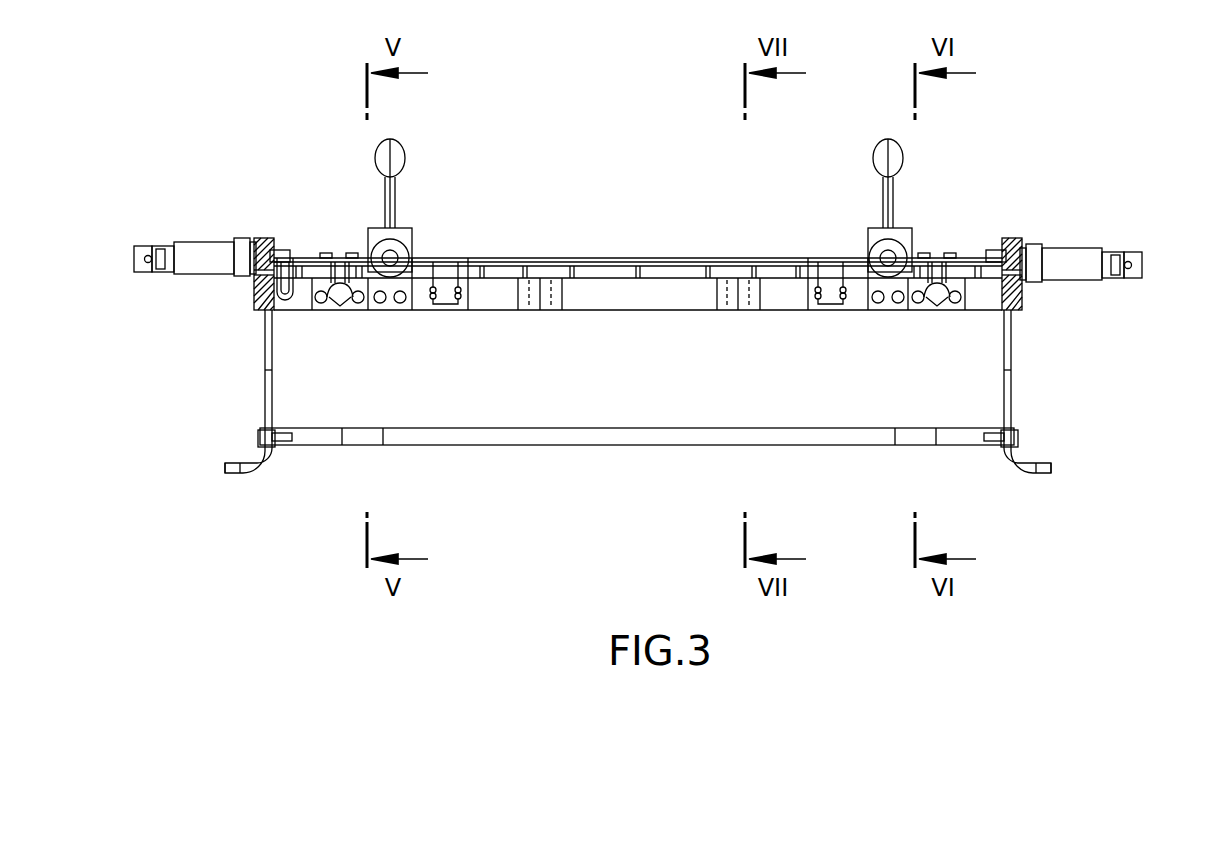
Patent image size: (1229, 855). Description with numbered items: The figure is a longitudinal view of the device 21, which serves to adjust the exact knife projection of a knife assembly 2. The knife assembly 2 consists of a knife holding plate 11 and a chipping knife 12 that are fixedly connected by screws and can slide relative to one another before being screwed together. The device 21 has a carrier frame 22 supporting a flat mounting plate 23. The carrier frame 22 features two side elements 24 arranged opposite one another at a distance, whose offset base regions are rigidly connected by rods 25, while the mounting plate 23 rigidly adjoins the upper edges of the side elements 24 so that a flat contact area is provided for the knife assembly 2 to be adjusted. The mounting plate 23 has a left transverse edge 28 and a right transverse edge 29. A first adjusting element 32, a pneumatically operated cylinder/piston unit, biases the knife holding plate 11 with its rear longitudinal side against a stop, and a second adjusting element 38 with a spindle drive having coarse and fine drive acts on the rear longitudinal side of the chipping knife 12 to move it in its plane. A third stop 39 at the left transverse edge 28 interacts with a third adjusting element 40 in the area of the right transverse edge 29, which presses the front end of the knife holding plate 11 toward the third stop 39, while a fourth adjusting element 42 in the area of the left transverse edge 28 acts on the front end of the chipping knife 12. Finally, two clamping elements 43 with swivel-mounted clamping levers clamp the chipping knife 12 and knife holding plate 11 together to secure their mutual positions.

The knife assembly 2 is at (596, 254).
The knife holding plate 11 is at (688, 280).
The chipping knife 12 is at (694, 262).
The device 21 is at (1050, 167).
The carrier frame 22 is at (638, 450).
The mounting plate 23 is at (606, 312).
The side elements 24 is at (265, 390).
The rods 25 is at (780, 437).
The left transverse edge 28 is at (253, 290).
The right transverse edge 29 is at (1022, 300).
The first adjusting element 32 is at (340, 312).
The second adjusting element 38 is at (412, 240).
The third stop 39 is at (282, 312).
The third adjusting element 40 is at (1142, 262).
The fourth adjusting element 42 is at (134, 252).
The clamping elements 43 is at (442, 312).